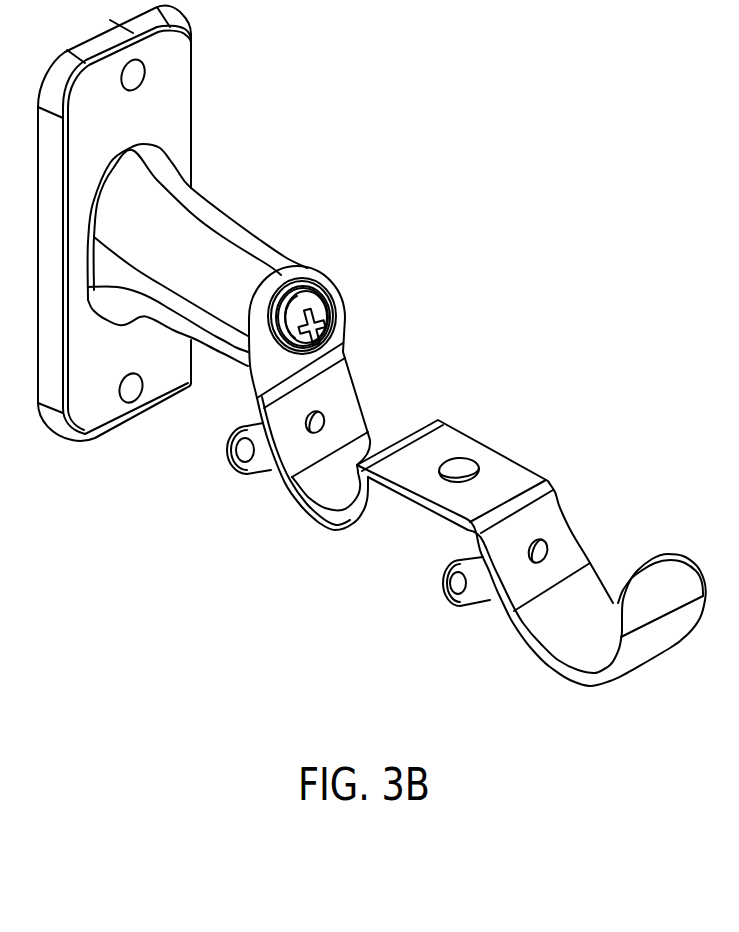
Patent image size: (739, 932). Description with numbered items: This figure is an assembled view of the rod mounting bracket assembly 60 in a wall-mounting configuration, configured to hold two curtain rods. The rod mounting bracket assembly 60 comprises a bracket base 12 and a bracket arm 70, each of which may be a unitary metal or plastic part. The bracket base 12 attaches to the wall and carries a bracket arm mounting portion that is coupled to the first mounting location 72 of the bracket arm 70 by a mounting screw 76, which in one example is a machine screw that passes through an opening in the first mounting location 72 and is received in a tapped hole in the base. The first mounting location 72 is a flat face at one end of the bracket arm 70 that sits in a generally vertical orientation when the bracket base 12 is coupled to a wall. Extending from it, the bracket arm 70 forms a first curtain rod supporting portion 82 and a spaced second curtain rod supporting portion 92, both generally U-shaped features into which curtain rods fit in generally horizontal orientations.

The bracket base 12 is at (264, 132).
The first mounting location 72 is at (320, 268).
The mounting screw 76 is at (338, 299).
The rod mounting bracket assembly 60 is at (522, 378).
The bracket arm 70 is at (565, 446).
The first curtain rod supporting portion 82 is at (337, 525).
The second curtain rod supporting portion 92 is at (593, 685).